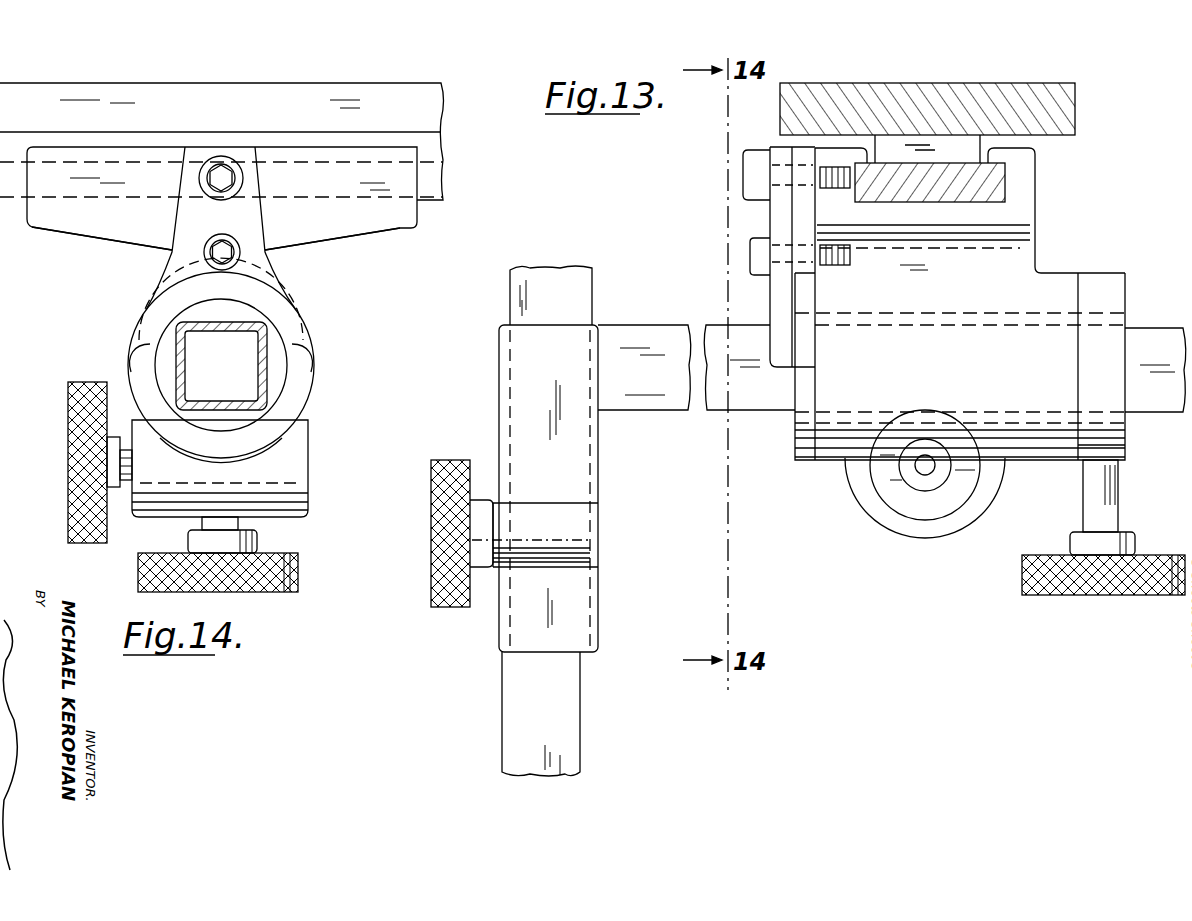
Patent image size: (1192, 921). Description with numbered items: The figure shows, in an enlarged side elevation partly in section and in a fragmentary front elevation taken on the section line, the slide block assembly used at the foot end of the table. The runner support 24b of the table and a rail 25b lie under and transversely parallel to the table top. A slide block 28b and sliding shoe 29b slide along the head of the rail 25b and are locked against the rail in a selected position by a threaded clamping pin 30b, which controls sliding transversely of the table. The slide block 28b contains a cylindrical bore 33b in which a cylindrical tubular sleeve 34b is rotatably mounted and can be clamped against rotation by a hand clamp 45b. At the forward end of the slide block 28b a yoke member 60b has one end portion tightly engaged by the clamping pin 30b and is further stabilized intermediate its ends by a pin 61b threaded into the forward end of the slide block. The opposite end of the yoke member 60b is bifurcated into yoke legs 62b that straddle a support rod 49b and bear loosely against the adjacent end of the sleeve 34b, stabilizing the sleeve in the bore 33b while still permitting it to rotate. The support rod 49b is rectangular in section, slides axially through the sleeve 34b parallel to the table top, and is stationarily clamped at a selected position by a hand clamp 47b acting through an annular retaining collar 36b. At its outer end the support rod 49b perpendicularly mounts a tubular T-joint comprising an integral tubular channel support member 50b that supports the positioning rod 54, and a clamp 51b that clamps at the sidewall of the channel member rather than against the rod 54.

In FIG. 14, the runner support 24b is at (208, 84).
In FIG. 13, the runner support 24b is at (935, 92).
In FIG. 14, the rail 25b is at (433, 178).
In FIG. 13, the rail 25b is at (1005, 180).
In FIG. 14, the slide block 28b is at (295, 460).
In FIG. 13, the slide block 28b is at (945, 298).
In FIG. 14, the sliding shoe 29b is at (380, 222).
In FIG. 13, the sliding shoe 29b is at (1030, 213).
In FIG. 14, the threaded clamping pin 30b is at (244, 178).
In FIG. 13, the threaded clamping pin 30b is at (757, 173).
In FIG. 13, the cylindrical bore 33b is at (1050, 418).
In FIG. 14, the cylindrical tubular sleeve 34b is at (138, 370).
In FIG. 13, the cylindrical tubular sleeve 34b is at (794, 453).
In FIG. 13, the annular retaining collar 36b is at (1115, 441).
In FIG. 13, the hand clamp 45b is at (876, 505).
In FIG. 14, the hand clamp 47b is at (298, 574).
In FIG. 13, the hand clamp 47b is at (1066, 596).
In FIG. 14, the support rod 49b is at (262, 388).
In FIG. 13, the support rod 49b is at (670, 400).
In FIG. 13, the tubular channel support member 50b is at (520, 378).
In FIG. 13, the clamp 51b is at (455, 605).
In FIG. 13, the positioning rod 54 is at (560, 308).
In FIG. 14, the yoke member 60b is at (280, 303).
In FIG. 13, the yoke member 60b is at (772, 297).
In FIG. 14, the pin 61b is at (204, 253).
In FIG. 13, the pin 61b is at (752, 256).
In FIG. 14, the yoke legs 62b is at (135, 330).
In FIG. 13, the yoke legs 62b is at (774, 346).